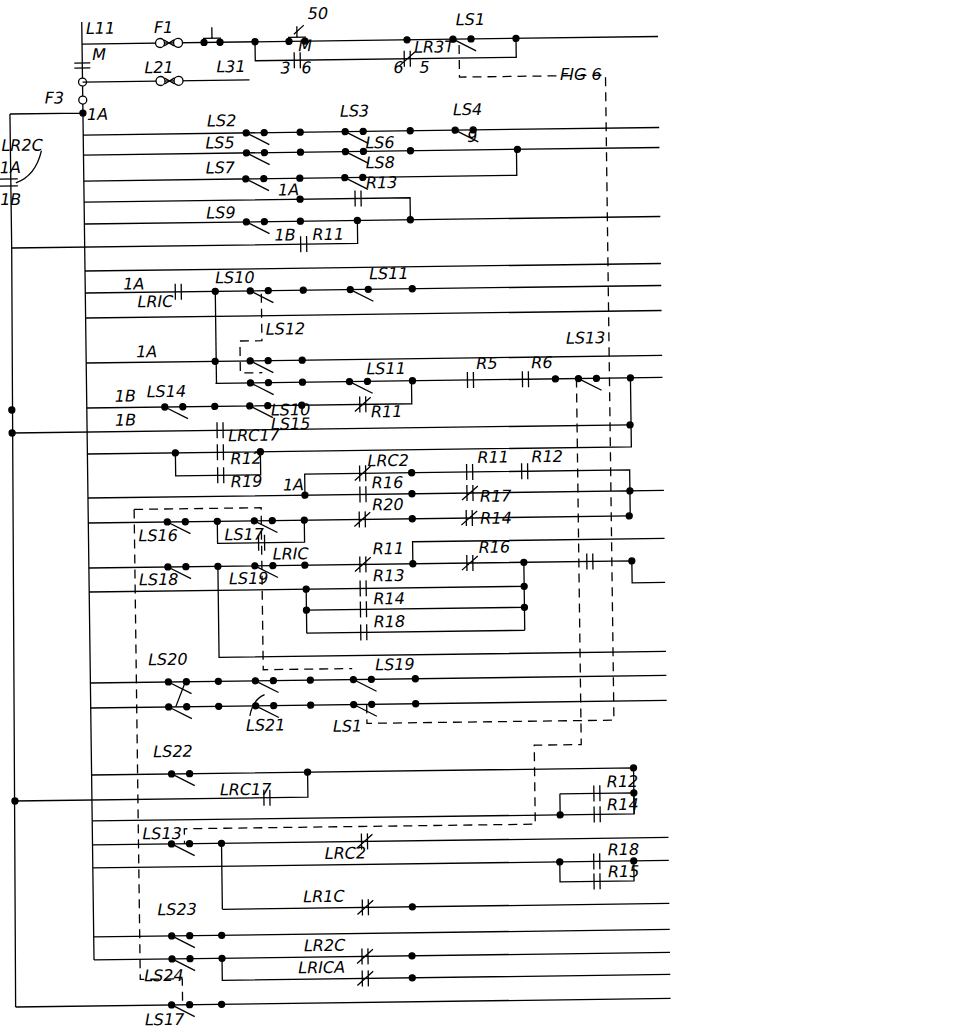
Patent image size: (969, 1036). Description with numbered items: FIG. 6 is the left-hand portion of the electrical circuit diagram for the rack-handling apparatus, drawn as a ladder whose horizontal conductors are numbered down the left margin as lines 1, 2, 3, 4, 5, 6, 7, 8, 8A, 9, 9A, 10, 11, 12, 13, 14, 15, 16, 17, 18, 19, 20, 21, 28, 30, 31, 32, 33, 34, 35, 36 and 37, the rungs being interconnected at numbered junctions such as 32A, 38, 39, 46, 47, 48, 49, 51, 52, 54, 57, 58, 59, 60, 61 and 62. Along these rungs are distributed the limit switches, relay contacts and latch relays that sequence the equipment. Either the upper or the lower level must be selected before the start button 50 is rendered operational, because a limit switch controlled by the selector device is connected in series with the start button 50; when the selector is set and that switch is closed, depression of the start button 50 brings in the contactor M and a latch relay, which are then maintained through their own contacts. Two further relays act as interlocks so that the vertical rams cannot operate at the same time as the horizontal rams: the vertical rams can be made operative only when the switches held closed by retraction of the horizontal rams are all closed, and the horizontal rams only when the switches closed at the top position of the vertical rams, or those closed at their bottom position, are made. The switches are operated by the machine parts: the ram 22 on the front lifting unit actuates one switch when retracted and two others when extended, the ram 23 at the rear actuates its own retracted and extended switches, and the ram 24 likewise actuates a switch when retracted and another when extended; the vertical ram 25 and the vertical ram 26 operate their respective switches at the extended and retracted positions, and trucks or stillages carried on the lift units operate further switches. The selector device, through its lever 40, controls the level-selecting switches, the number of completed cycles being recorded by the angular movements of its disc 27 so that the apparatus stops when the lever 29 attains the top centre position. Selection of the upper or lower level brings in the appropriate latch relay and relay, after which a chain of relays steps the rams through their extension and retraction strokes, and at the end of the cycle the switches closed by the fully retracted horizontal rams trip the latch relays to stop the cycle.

The line 1 conductor 1 is at (352, 42).
The line 2 conductor 2 is at (147, 82).
The line 3 conductor / node 3 is at (357, 81).
The line 4 conductor / node 4 is at (357, 88).
The line 5 conductor / node 5 is at (289, 101).
The line 6 conductor 6 is at (233, 206).
The line 7 conductor / node 7 is at (358, 170).
The line 8 conductor / node 8 is at (213, 185).
The line 8A conductor 8A is at (351, 268).
The line 9 conductor / node 9 is at (359, 290).
The line 9A conductor 9A is at (351, 315).
The line 10 conductor / node 10 is at (354, 251).
The line 11 conductor / node 11 is at (354, 260).
The line 12 conductor / node 12 is at (230, 289).
The line 13 conductor / node 13 is at (319, 319).
The line 14 conductor 14 is at (64, 455).
The line 15 conductor / node 15 is at (155, 389).
The line 16 conductor / node 16 is at (356, 391).
The line 17 conductor / node 17 is at (339, 398).
The line 18 / node 18 is at (189, 448).
The line 19 conductor 19 is at (359, 569).
The line 20 conductor / node 20 is at (287, 481).
The line 21 conductor / node 21 is at (287, 491).
The ram 22 is at (287, 513).
The ram 23 is at (358, 523).
The ram 24 is at (355, 526).
The vertical ram 25 is at (361, 705).
The vertical ram 26 is at (343, 600).
The disc 27 is at (170, 598).
The line 28 conductor / node 28 is at (305, 641).
The lever 29 is at (360, 663).
The line 30 conductor / node 30 is at (360, 663).
The line 31 / node 31 is at (246, 687).
The line 32 conductor / node 32 is at (360, 717).
The node 32A is at (207, 529).
The line 33 conductor / node 33 is at (361, 720).
The line 34 conductor 34 is at (364, 957).
The line 35 conductor / node 35 is at (362, 776).
The line 36 conductor 36 is at (342, 1003).
The line 37 / node 37 is at (140, 790).
The node 38 is at (317, 555).
The node 39 is at (537, 573).
The lever 40 is at (644, 549).
The node 46 is at (217, 670).
The node 47 is at (321, 689).
The node 48 is at (427, 667).
The node 49 is at (227, 695).
The start button 50 is at (316, 713).
The node 51 is at (427, 692).
The node 52 is at (467, 760).
The node 54 is at (235, 874).
The node 57 is at (422, 896).
The node 58 is at (235, 924).
The node 59 is at (236, 947).
The node 60 is at (428, 945).
The node 61 is at (427, 967).
The node 62 is at (236, 993).